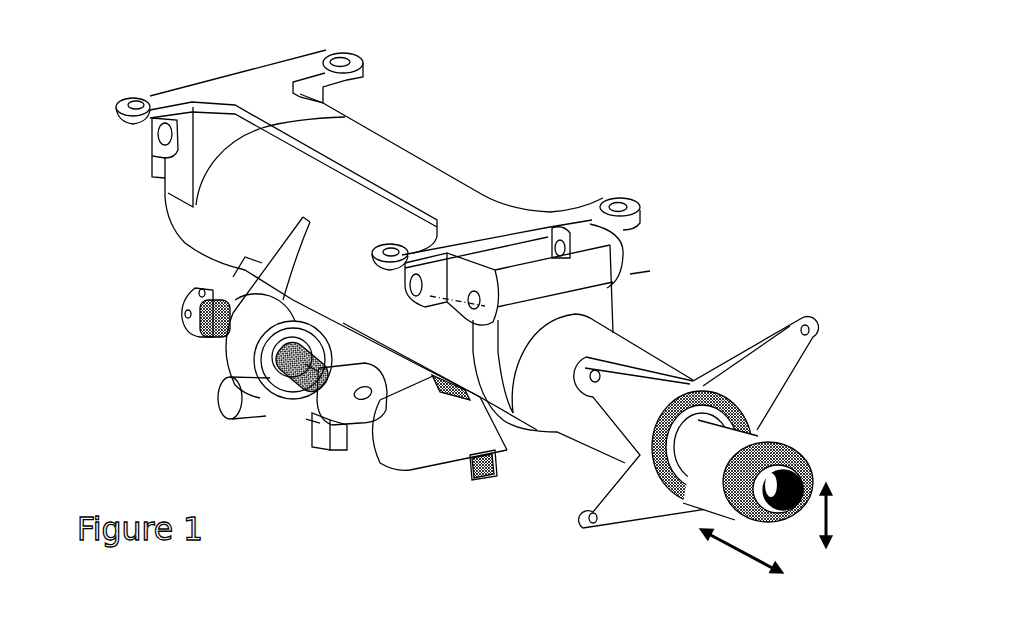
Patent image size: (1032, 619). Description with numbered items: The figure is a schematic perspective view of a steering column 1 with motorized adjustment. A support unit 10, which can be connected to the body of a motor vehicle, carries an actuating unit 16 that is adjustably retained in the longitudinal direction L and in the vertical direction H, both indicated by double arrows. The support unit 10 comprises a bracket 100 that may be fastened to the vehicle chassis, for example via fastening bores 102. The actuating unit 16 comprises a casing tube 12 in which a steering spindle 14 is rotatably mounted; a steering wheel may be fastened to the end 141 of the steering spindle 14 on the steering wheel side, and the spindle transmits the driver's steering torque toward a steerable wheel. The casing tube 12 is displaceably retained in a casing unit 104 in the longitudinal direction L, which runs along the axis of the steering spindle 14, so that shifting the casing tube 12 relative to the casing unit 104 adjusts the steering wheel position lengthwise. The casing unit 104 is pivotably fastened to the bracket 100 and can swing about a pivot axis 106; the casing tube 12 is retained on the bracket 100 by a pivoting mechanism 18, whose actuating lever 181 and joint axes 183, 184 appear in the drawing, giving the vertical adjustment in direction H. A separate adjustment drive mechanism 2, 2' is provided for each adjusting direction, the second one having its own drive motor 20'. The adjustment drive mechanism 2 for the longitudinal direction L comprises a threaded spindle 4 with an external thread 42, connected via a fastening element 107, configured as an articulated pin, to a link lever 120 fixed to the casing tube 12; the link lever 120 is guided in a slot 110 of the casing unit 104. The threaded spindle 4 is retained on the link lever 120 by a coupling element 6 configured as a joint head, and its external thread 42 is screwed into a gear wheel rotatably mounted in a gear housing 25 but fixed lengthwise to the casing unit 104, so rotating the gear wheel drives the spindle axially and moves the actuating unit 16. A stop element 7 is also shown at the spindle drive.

The steering column 1 is at (618, 110).
The adjustment drive mechanism 2 is at (271, 352).
The adjustment drive mechanism 2' is at (458, 503).
The threaded spindle 4 is at (200, 325).
The coupling element 6 is at (338, 383).
The stop element 7 is at (193, 300).
The support unit 10 is at (456, 132).
The casing tube 12 is at (597, 340).
The steering spindle 14 is at (740, 440).
The actuating unit 16 is at (713, 304).
The pivoting mechanism 18 is at (636, 249).
The drive motor 20' is at (432, 483).
The gear housing 25 is at (248, 346).
The external thread 42 is at (225, 408).
The bracket 100 is at (340, 133).
The fastening bore 102 is at (350, 55).
The casing unit 104 is at (225, 216).
The pivot axis 106 is at (364, 89).
The fastening element 107 is at (363, 400).
The slot 110 is at (465, 400).
The link lever 120 is at (393, 380).
The end on steering wheel side 141 is at (790, 450).
The actuating lever 181 is at (565, 252).
The joint axis 183 is at (645, 272).
The joint axis 184 is at (410, 286).
The vertical direction H is at (832, 520).
The longitudinal direction L is at (733, 551).